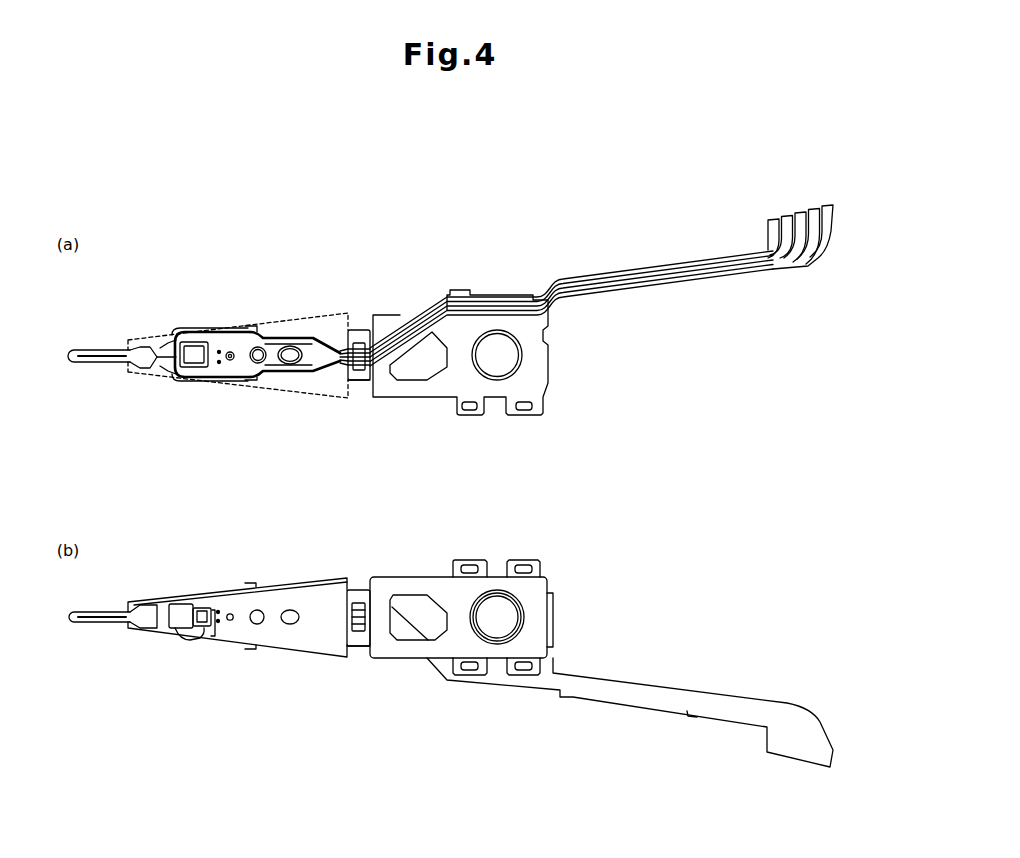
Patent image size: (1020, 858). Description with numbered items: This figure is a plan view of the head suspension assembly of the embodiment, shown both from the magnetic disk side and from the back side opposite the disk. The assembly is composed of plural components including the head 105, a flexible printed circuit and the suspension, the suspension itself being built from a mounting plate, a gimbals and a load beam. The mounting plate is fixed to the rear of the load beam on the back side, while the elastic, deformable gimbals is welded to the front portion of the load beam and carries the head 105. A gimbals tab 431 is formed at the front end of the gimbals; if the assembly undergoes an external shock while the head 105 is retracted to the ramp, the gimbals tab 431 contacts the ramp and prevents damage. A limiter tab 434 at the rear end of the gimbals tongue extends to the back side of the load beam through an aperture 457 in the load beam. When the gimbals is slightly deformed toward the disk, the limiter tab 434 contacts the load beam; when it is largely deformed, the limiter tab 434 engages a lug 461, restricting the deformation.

The head 105 is at (194, 351).
The gimbals tab 431 is at (164, 361).
The aperture 457 is at (204, 608).
The lug 461 is at (187, 620).
The limiter tab 434 is at (212, 626).